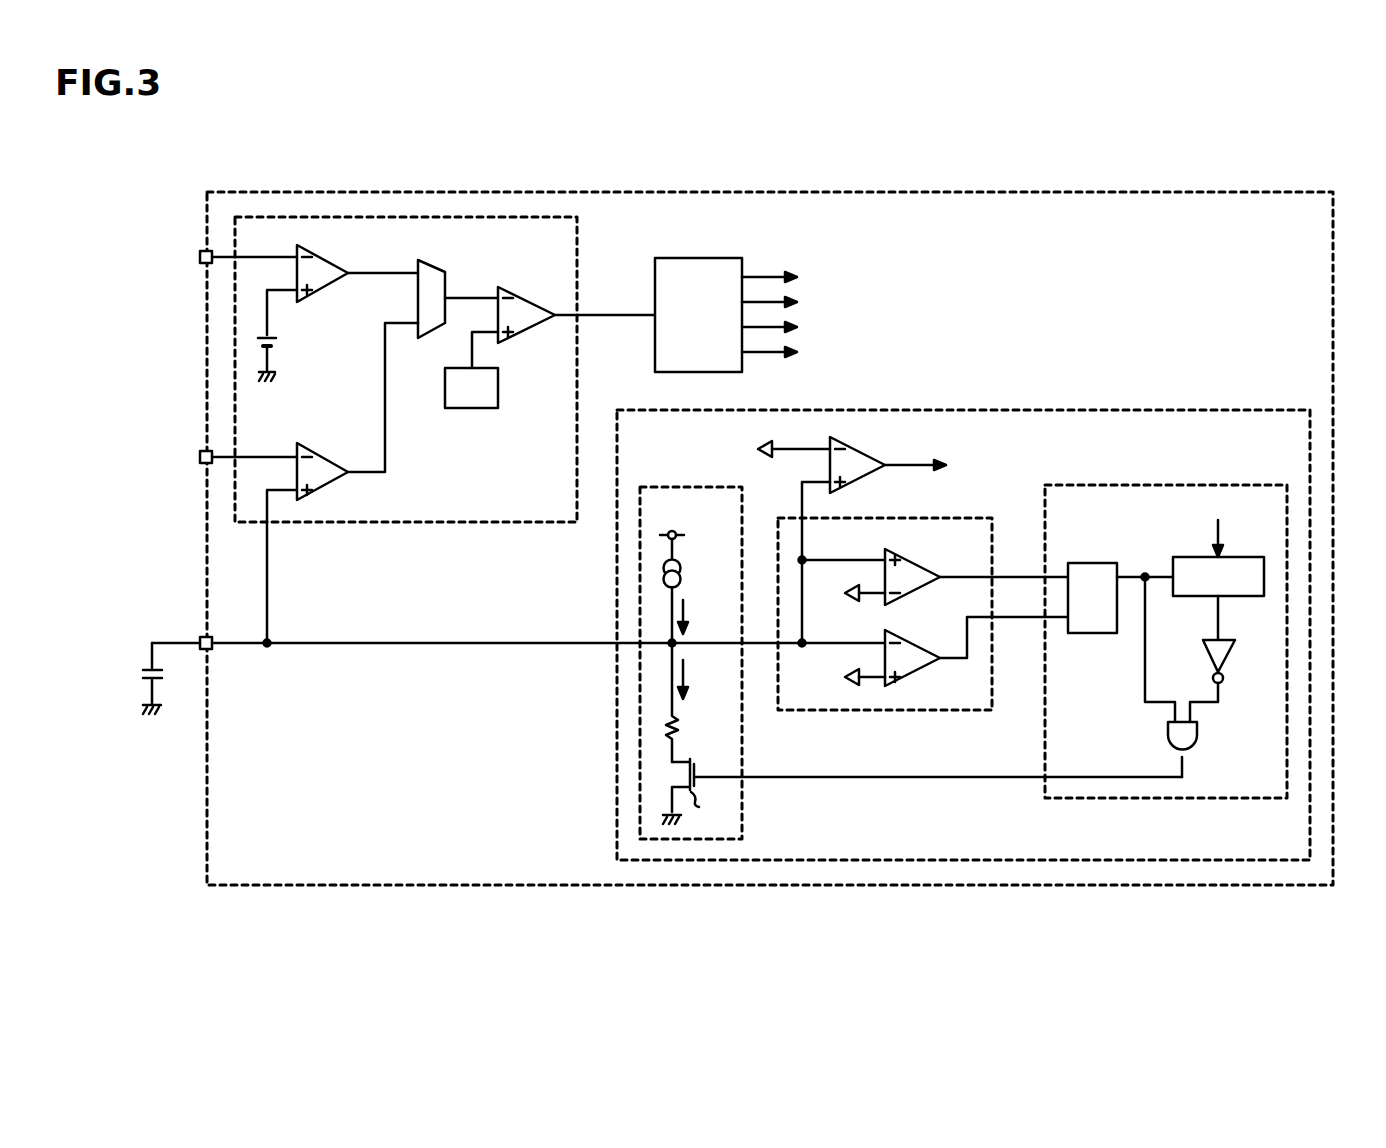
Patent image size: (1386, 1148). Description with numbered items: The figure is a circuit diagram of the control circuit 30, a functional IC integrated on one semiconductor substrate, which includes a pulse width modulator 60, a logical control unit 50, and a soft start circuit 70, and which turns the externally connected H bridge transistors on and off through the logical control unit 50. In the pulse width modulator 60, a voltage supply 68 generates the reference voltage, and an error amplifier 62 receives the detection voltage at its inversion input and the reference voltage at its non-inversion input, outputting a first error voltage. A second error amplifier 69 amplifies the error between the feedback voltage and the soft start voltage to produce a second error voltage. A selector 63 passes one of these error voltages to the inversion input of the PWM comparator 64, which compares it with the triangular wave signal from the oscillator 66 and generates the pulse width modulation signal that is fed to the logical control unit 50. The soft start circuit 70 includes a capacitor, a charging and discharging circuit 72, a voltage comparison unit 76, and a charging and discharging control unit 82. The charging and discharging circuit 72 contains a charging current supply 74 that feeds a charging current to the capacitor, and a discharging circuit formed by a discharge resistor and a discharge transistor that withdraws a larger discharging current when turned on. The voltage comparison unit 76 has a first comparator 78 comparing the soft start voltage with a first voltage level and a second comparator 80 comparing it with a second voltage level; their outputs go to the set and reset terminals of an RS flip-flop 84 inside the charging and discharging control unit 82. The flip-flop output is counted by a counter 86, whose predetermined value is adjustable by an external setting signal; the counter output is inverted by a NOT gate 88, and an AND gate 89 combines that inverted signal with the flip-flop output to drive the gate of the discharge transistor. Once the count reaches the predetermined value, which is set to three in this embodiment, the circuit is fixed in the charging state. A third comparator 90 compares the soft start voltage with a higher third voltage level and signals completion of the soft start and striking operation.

The control circuit 30 is at (765, 885).
The logical control unit 50 is at (700, 258).
The pulse width modulator 60 is at (577, 237).
The error amplifier 62 is at (328, 250).
The selector 63 is at (432, 262).
The PWM comparator 64 is at (532, 292).
The oscillator 66 is at (472, 408).
The voltage supply 68 is at (277, 343).
The error amplifier 69 is at (328, 448).
The soft start circuit 70 is at (1128, 410).
The charging and discharging circuit 72 is at (742, 805).
The charging current supply 74 is at (681, 574).
The voltage comparison unit 76 is at (945, 518).
The first comparator 78 is at (918, 555).
The second comparator 80 is at (918, 637).
The charging and discharging control unit 82 is at (1170, 485).
The RS flip-flop 84 is at (1095, 563).
The counter 86 is at (1240, 557).
The NOT gate 88 is at (1228, 655).
The AND gate 89 is at (1197, 740).
The third comparator 90 is at (860, 443).